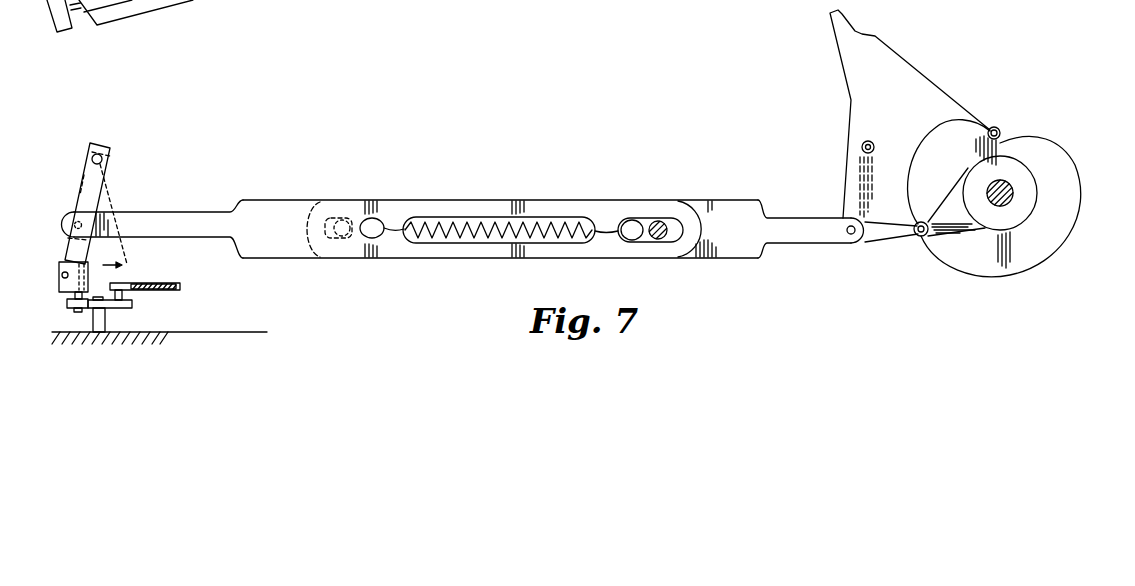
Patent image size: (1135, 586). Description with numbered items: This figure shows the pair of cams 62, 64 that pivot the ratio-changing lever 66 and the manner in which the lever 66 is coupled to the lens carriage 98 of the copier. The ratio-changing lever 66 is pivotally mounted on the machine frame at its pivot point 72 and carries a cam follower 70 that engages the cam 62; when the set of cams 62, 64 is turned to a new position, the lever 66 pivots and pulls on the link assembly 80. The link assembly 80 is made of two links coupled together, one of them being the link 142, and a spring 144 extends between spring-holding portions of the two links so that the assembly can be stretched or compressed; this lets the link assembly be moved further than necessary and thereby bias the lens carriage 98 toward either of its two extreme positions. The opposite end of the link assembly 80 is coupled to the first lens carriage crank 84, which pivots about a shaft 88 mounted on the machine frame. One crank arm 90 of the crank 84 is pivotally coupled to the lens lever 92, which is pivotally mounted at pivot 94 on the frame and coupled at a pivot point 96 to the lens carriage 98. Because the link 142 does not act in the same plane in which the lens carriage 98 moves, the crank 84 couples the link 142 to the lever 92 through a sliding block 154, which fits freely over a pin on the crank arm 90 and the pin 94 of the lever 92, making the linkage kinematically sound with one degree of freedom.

The cam 62 is at (1067, 140).
The cam 64 is at (1047, 238).
The ratio-changing lever 66 is at (905, 50).
The cam follower 70 is at (1000, 130).
The pivot point 72 is at (862, 143).
The link assembly 80 is at (482, 178).
The first lens carriage crank 84 is at (97, 142).
The shaft 88 is at (107, 158).
The crank arm 90 is at (82, 180).
The lens lever 92 is at (70, 300).
The pivot 94 is at (102, 310).
The pivot point 96 is at (118, 282).
The lens carriage 98 is at (182, 287).
The link 142 is at (260, 199).
The spring 144 is at (543, 230).
The sliding block 154 is at (59, 270).